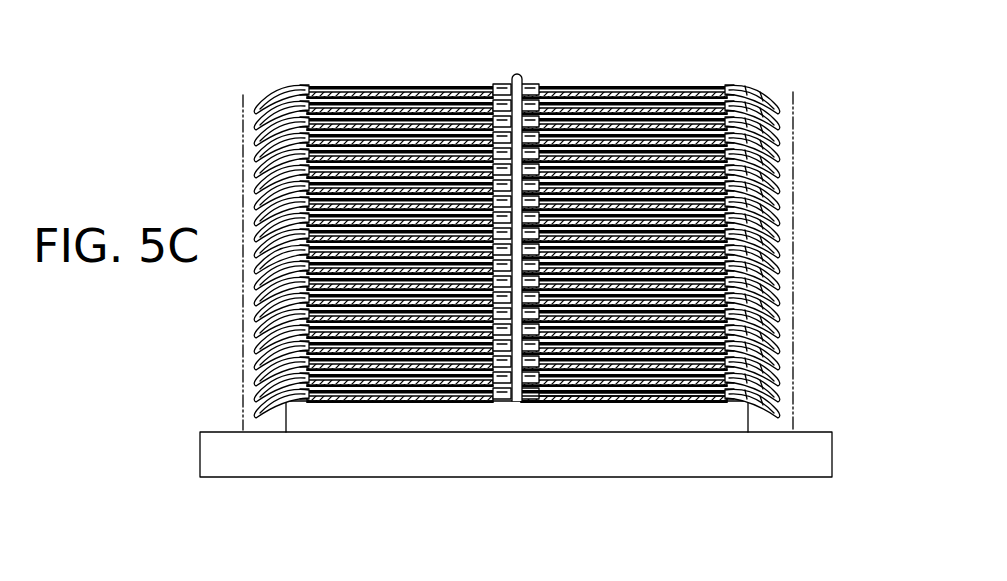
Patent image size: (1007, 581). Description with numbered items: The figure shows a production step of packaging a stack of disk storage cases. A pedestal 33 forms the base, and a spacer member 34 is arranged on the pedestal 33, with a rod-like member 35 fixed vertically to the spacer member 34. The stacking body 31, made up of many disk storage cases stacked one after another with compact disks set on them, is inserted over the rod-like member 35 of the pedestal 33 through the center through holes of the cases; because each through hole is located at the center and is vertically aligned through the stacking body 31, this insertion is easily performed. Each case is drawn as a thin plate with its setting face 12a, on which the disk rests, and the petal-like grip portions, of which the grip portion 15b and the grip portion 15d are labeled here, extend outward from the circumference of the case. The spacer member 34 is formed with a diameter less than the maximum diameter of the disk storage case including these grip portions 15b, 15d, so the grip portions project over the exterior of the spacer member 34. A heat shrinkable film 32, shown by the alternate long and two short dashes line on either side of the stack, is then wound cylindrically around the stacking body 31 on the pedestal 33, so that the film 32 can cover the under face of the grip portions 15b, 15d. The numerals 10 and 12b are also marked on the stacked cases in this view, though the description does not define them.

The stator core stack 10 is at (517, 310).
The setting face 12a is at (668, 399).
The core plate 12b is at (602, 398).
The grip portion 15b is at (780, 392).
The grip portion 15d is at (256, 414).
The stacking body 31 is at (788, 148).
The heat shrinkable film 32 is at (798, 223).
The pedestal 33 is at (822, 457).
The spacer member 34 is at (738, 420).
The rod-like member 35 is at (517, 74).